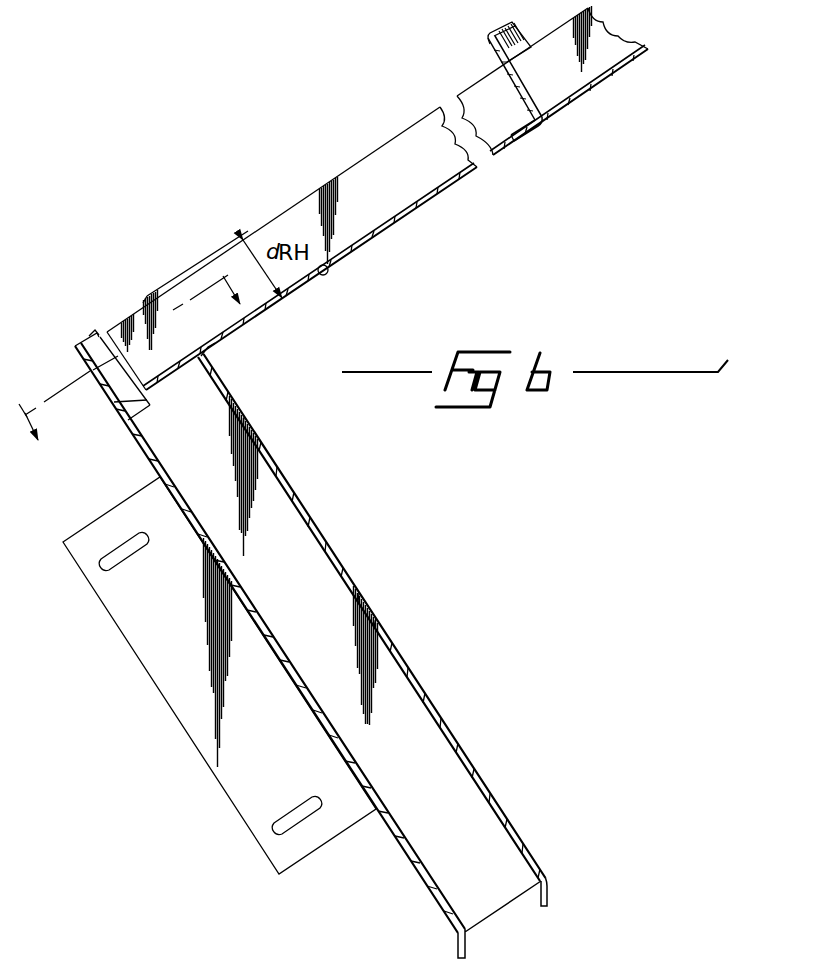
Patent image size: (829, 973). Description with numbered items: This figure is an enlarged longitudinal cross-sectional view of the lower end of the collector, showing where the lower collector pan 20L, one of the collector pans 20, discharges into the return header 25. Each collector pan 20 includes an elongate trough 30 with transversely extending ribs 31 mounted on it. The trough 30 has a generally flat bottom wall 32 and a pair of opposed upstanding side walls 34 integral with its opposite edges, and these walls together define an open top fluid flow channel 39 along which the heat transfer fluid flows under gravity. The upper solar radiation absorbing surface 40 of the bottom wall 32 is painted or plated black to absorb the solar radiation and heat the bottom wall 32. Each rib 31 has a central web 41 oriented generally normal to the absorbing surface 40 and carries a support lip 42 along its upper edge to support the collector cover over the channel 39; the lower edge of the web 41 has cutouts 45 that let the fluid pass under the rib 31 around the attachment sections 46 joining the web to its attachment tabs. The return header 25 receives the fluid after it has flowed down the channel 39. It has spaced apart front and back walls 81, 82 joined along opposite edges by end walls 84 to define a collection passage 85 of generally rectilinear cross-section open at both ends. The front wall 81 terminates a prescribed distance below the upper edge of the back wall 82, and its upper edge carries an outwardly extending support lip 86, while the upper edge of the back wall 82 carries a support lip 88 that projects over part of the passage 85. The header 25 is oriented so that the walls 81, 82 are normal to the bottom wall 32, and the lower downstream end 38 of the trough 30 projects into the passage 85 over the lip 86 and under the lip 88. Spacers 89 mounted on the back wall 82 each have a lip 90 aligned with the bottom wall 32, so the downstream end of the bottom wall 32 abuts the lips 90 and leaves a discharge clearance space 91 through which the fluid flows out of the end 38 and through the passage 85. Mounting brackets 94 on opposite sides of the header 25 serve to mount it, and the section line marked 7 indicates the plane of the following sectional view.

The collector pan 20 is at (348, 146).
The lower collector pan 20L is at (313, 185).
The return header 25 is at (475, 753).
The trough 30 is at (366, 250).
The rib 31 is at (488, 33).
The bottom wall 32 is at (416, 222).
The side wall 34 is at (381, 212).
The lower downstream end 38 is at (108, 332).
The fluid flow channel 39 is at (404, 160).
The solar radiation absorbing surface 40 is at (322, 277).
The central web 41 is at (512, 82).
The support lip 42 is at (516, 43).
The cutout 45 is at (540, 112).
The attachment section 46 is at (526, 112).
The front wall 81 is at (278, 465).
The back wall 82 is at (155, 468).
The end wall 84 is at (320, 608).
The collection passage 85 is at (290, 528).
The support lip 86 is at (214, 350).
The support lip 88 is at (90, 333).
The spacer 89 is at (145, 414).
The lip 90 is at (128, 397).
The discharge clearance space 91 is at (118, 400).
The mounting bracket 94 is at (212, 749).
The section line 7- 7 is at (129, 366).